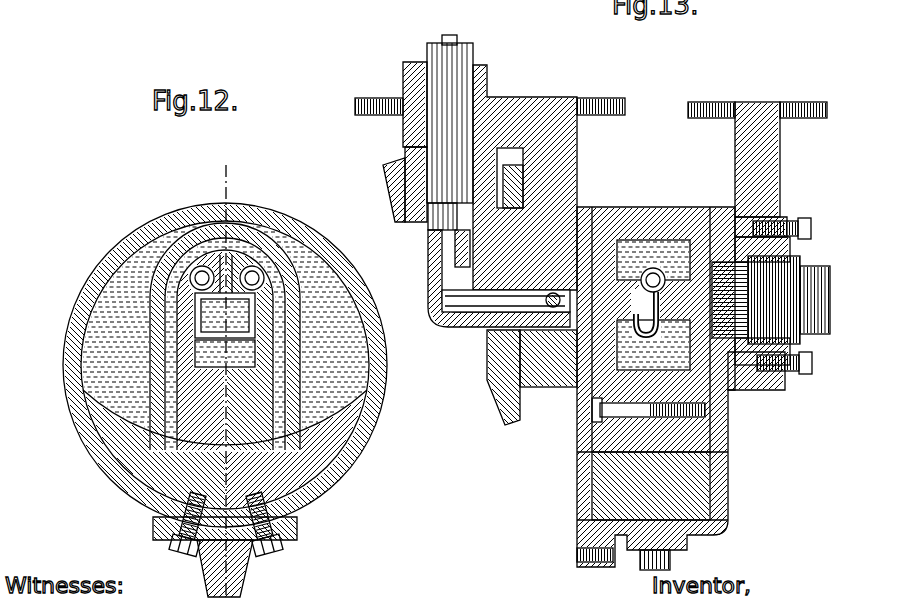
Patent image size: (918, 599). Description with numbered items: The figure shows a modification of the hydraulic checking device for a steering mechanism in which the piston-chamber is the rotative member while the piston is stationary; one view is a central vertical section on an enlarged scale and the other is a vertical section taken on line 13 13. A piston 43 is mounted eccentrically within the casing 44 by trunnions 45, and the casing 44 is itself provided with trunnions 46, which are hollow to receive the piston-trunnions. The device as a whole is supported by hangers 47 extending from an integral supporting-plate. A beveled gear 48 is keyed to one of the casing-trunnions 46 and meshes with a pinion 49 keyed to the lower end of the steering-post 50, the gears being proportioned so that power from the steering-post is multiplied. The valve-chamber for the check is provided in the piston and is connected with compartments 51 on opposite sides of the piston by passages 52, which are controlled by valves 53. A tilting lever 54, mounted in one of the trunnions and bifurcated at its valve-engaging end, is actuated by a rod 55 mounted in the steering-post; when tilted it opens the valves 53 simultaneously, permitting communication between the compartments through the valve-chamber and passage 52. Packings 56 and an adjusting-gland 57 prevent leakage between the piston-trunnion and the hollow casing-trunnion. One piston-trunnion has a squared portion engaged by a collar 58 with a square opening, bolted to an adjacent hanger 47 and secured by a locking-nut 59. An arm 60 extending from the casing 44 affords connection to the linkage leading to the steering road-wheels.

In FIG. 12, the section line 13 is at (238, 172).
In FIG. 12, the piston 43 is at (229, 230).
In FIG. 13, the piston 43 is at (656, 268).
In FIG. 12, the casing 44 is at (153, 232).
In FIG. 13, the casing 44 is at (580, 497).
In FIG. 13, the trunnions 45 is at (568, 345).
In FIG. 13, the trunnions 46 is at (550, 372).
In FIG. 13, the hangers 47 is at (565, 152).
In FIG. 13, the beveled gear 48 is at (506, 385).
In FIG. 13, the pinion 49 is at (400, 187).
In FIG. 13, the steering-post 50 is at (440, 72).
In FIG. 12, the compartments 51 is at (272, 268).
In FIG. 13, the compartments 51 is at (672, 255).
In FIG. 12, the passages 52 is at (150, 293).
In FIG. 12, the valves 53 is at (160, 258).
In FIG. 13, the valves 53 is at (640, 255).
In FIG. 12, the tilting lever 54 is at (200, 338).
In FIG. 13, the tilting lever 54 is at (483, 300).
In FIG. 13, the rod 55 is at (448, 250).
In FIG. 13, the packings 56 is at (768, 196).
In FIG. 13, the adjusting-gland 57 is at (772, 392).
In FIG. 13, the collar 58 is at (808, 365).
In FIG. 13, the locking-nut 59 is at (823, 262).
In FIG. 12, the arm 60 is at (250, 565).